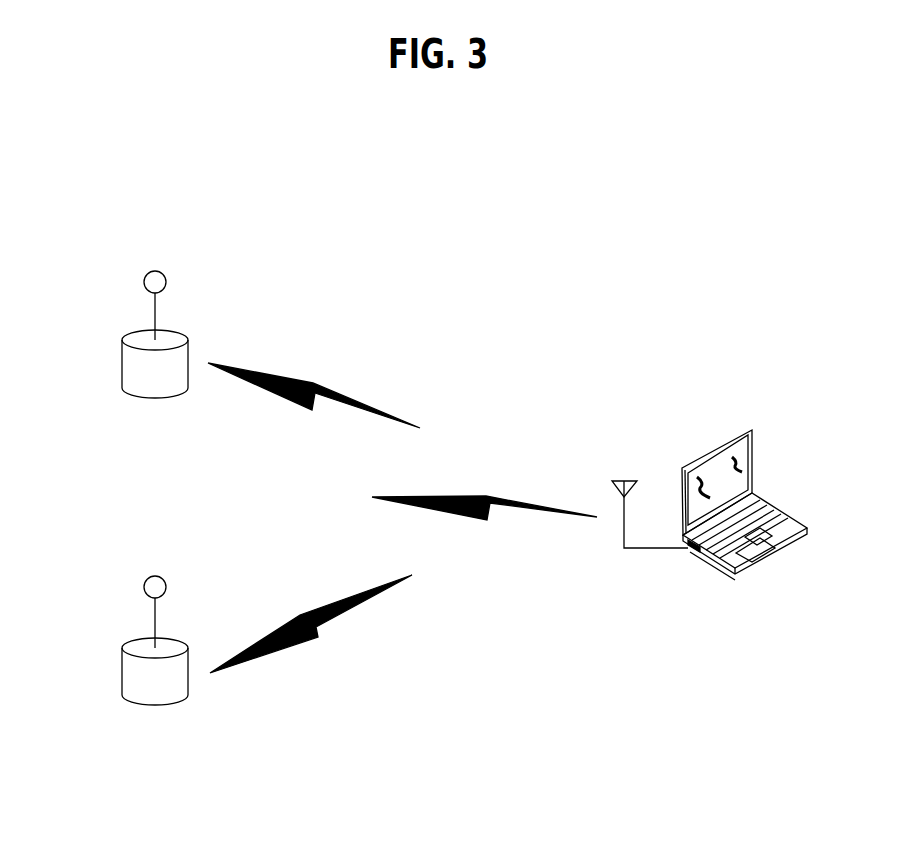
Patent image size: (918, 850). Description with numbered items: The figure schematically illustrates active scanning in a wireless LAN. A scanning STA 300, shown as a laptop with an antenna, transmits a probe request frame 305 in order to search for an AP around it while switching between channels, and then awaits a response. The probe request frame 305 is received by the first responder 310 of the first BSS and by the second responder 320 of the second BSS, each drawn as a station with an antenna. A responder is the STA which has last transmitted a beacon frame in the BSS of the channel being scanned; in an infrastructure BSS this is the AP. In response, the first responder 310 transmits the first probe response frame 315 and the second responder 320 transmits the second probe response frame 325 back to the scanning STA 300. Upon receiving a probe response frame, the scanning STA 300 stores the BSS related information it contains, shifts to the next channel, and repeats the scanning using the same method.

The scanning STA 300 is at (757, 563).
The probe request frame 305 is at (532, 463).
The responder 1 310 is at (130, 332).
The probe response frame 1 315 is at (410, 320).
The responder 2 320 is at (130, 640).
The probe response frame 2 325 is at (433, 673).